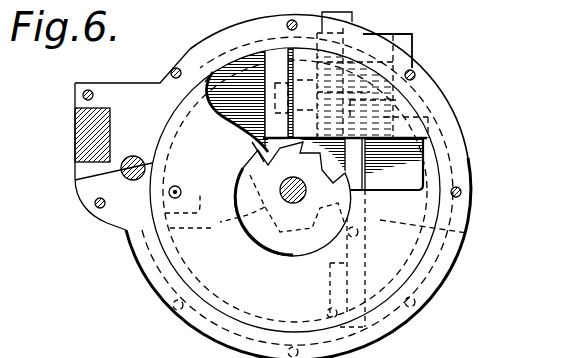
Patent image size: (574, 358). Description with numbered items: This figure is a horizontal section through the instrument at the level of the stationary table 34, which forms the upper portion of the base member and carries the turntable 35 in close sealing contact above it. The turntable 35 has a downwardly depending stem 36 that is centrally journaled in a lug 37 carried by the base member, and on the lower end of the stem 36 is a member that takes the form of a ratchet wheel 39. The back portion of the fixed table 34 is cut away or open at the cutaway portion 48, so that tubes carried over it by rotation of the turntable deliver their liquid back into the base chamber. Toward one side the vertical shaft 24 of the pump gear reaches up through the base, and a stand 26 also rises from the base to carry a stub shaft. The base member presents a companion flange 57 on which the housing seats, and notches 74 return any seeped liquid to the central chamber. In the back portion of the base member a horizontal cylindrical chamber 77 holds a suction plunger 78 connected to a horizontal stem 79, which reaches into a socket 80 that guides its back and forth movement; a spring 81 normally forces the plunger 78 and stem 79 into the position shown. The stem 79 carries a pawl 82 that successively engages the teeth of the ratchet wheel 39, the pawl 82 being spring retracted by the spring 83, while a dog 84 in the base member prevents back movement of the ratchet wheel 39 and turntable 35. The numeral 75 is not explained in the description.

The vertical shaft 24 is at (122, 170).
The stand 26 is at (75, 118).
The stationary table 34 is at (228, 276).
The turntable 35 is at (172, 193).
The turntable stem 36 is at (294, 204).
The lug 37 is at (245, 150).
The ratchet wheel 39 is at (270, 264).
The cutaway portion 48 is at (368, 183).
The companion flange 57 is at (397, 322).
The notches 74 is at (213, 72).
The sheet mark 75 is at (544, 348).
The horizontal cylindrical chamber 77 is at (413, 63).
The suction plunger 78 is at (420, 100).
The horizontal stem 79 is at (437, 143).
The socket 80 is at (444, 288).
The spring 81 is at (417, 33).
The pawl 82 is at (458, 236).
The spring 83 is at (402, 161).
The dog 84 is at (250, 143).